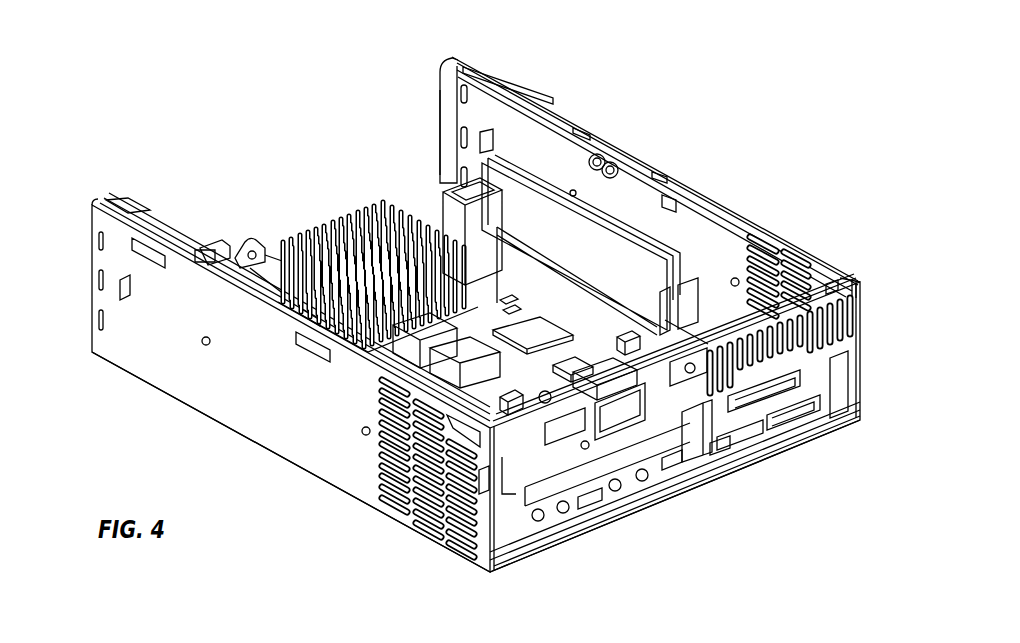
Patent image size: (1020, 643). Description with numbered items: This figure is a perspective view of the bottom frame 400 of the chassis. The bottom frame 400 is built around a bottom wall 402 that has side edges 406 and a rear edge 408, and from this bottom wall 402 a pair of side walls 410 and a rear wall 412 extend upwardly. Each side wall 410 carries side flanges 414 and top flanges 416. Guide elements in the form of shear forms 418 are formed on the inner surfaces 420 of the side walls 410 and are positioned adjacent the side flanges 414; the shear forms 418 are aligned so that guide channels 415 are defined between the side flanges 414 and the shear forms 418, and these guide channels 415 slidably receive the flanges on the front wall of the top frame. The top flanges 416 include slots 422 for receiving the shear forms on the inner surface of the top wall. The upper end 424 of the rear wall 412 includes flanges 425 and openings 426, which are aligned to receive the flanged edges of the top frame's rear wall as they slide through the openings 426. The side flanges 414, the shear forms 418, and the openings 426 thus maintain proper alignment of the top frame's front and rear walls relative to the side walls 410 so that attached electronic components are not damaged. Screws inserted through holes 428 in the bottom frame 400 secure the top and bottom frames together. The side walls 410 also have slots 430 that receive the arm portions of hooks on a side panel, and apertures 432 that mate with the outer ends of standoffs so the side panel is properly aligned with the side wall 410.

The bottom frame 400 is at (746, 84).
The bottom wall 402 is at (572, 313).
The side edges 406 is at (289, 462).
The rear edge 408 is at (668, 502).
The side walls 410 is at (275, 410).
The rear wall 412 is at (853, 408).
The side flanges 414 is at (110, 203).
The guide channels 415 is at (462, 125).
The top flanges 416 is at (97, 203).
The shear forms 418 is at (98, 242).
The inner surfaces 420 is at (528, 125).
The slots 422 is at (198, 266).
The upper end 424 is at (838, 286).
The flanges 425 is at (508, 458).
The openings 426 is at (530, 475).
The holes 428 is at (668, 174).
The slots 430 is at (125, 300).
The apertures 432 is at (208, 346).